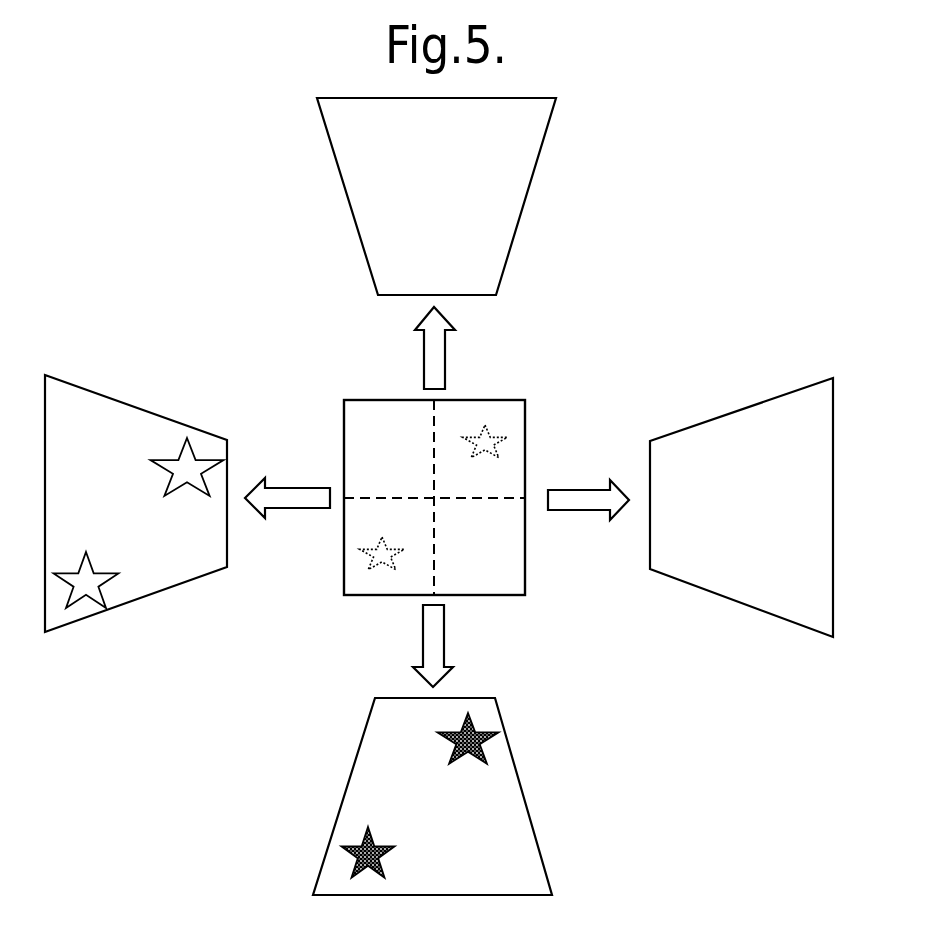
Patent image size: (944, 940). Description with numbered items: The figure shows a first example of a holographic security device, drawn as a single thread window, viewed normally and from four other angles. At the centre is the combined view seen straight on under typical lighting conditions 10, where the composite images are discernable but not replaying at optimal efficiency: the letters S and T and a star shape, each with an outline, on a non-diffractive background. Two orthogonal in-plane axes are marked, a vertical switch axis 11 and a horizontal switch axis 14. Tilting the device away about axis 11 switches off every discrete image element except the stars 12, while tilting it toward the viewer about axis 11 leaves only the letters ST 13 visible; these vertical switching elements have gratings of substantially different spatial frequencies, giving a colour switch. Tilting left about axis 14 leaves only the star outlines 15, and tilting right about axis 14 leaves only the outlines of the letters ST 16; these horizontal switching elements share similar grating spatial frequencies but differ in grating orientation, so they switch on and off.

The combined view under typical lighting conditions 10 is at (525, 410).
The vertical switch axis 11 is at (525, 495).
The stars 12 is at (382, 863).
The letters ST 13 is at (483, 172).
The horizontal switch axis 14 is at (430, 583).
The star outlines 15 is at (197, 488).
The outlines of the letters ST 16 is at (783, 540).